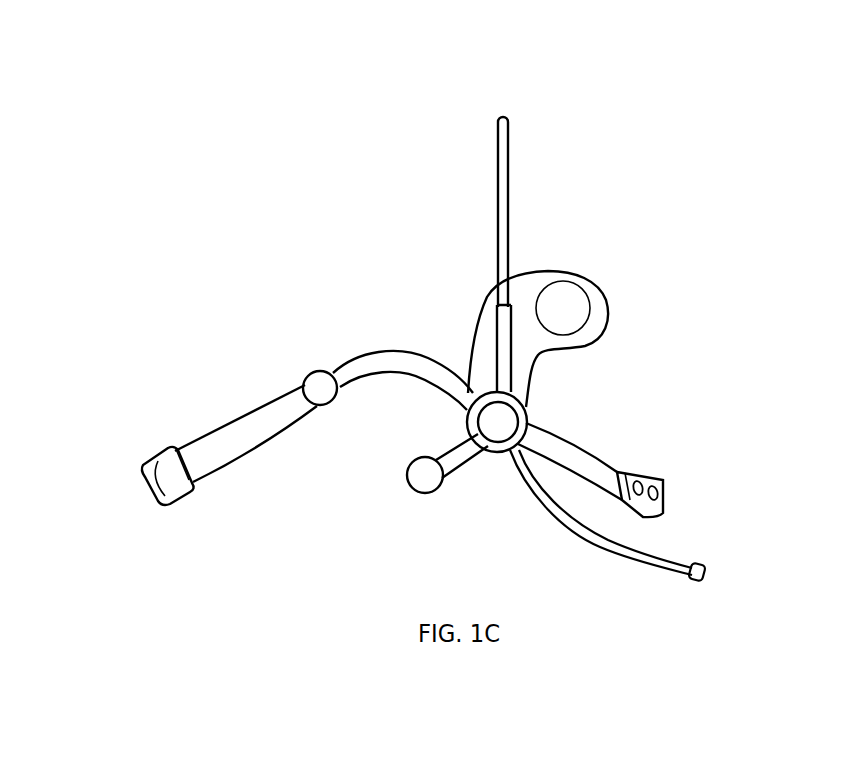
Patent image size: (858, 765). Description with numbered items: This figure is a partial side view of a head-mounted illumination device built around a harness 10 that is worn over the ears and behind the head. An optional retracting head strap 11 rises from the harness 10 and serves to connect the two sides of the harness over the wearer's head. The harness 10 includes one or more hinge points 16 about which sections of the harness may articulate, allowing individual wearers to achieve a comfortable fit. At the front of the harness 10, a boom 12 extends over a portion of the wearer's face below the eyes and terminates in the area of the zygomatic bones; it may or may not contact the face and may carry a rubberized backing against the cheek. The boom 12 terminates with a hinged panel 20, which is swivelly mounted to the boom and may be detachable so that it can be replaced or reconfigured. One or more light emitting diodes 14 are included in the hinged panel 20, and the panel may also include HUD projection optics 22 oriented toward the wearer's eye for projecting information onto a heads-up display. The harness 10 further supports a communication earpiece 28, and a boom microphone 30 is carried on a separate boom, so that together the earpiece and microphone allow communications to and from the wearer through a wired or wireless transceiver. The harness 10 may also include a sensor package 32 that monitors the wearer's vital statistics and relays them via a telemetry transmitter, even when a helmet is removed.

The harness 10 is at (210, 448).
The retracting head strap 11 is at (500, 138).
The boom 12 is at (557, 460).
The light emitting diode 14 is at (638, 481).
The hinge point 16 is at (303, 383).
The hinged panel 20 is at (667, 500).
The HUD projection optics 22 is at (667, 479).
The communication earpiece 28 is at (408, 482).
The boom microphone 30 is at (707, 570).
The sensor package 32 is at (578, 303).